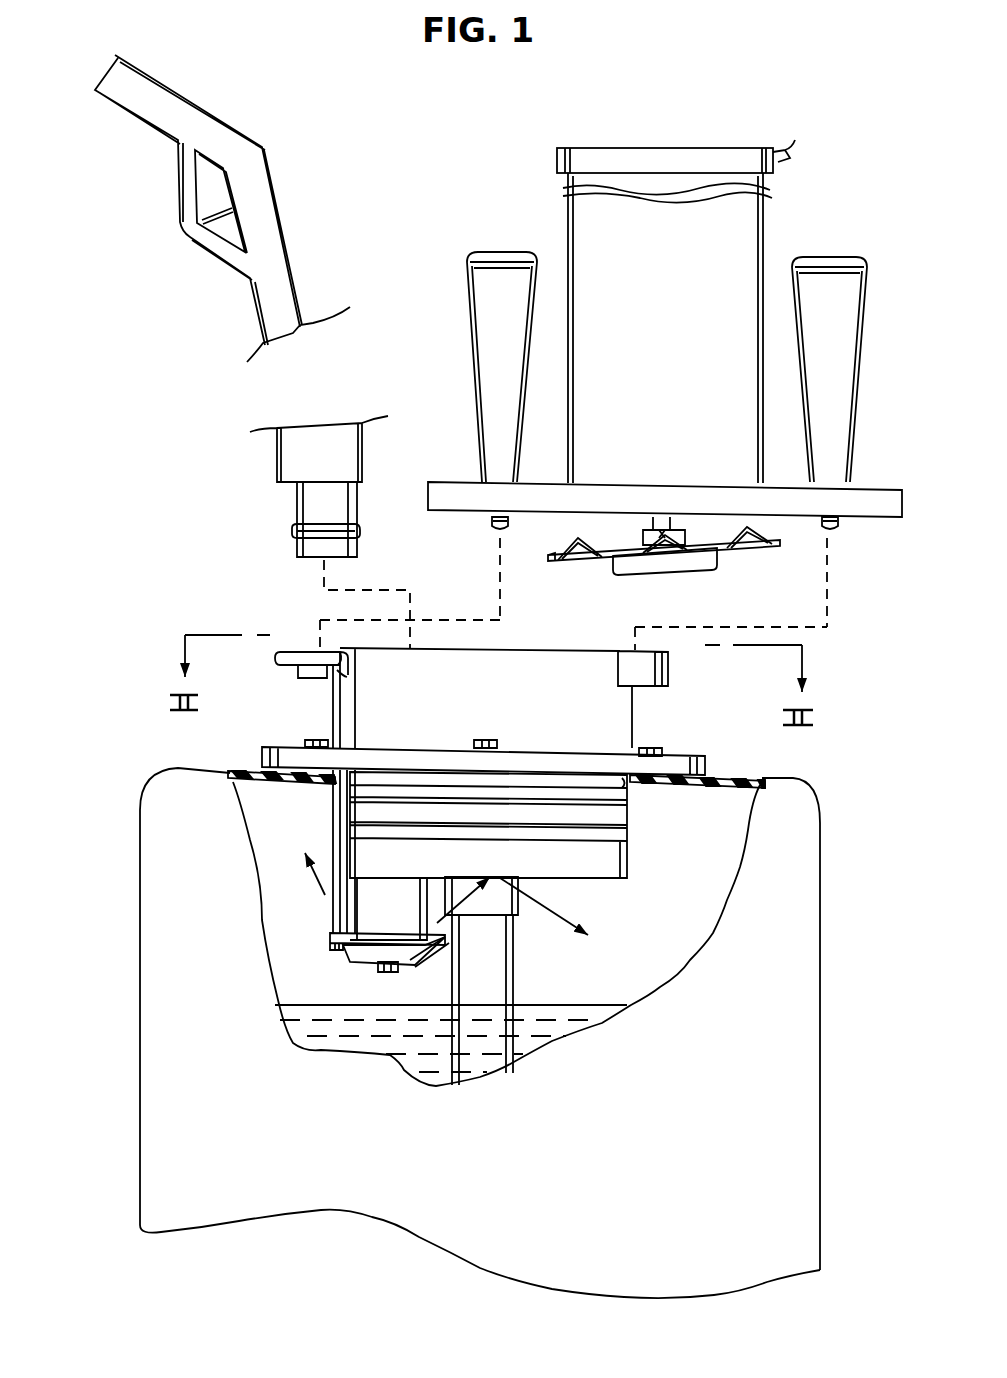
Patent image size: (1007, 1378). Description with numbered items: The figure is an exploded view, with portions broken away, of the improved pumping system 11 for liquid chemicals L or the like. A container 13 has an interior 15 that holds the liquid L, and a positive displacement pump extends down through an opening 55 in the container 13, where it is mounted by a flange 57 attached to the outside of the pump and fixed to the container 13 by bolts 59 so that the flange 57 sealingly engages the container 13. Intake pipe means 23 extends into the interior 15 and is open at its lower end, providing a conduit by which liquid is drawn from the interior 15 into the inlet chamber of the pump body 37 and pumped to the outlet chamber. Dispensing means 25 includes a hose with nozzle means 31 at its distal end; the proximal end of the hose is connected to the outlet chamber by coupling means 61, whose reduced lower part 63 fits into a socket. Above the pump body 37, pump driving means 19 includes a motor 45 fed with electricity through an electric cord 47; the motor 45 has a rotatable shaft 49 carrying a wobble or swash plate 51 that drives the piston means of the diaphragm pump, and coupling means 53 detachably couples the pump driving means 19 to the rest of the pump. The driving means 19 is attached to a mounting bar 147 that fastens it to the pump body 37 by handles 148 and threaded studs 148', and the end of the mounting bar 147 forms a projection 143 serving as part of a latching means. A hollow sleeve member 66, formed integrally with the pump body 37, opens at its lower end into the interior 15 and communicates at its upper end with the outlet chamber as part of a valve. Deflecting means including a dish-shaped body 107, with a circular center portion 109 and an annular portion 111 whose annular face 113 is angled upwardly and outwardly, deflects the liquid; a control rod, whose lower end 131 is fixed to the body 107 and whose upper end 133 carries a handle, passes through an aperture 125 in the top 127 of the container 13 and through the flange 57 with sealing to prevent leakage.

The pumping system 11 is at (193, 592).
The container 13 is at (802, 942).
The interior 15 is at (660, 943).
The pump driving means 19 is at (775, 232).
The intake pipe means 23 is at (493, 977).
The dispensing means 25 is at (380, 208).
The nozzle means 31 is at (255, 187).
The pump body 37 is at (612, 720).
The motor 45 is at (588, 215).
The electric cord 47 is at (782, 152).
The rotatable shaft 49 is at (673, 523).
The swash plate 51 is at (752, 547).
The coupling means 53 is at (867, 480).
The opening 55 is at (627, 807).
The flange 57 is at (693, 753).
The bolts 59 is at (317, 742).
The coupling means 61 is at (340, 462).
The reduced lower part 63 is at (345, 545).
The hollow sleeve member 66 is at (372, 892).
The dish-shaped body 107 is at (347, 962).
The circular center portion 109 is at (392, 972).
The annular portion 111 is at (437, 967).
The annular face 113 is at (433, 928).
The aperture 125 is at (333, 797).
The top 127 is at (705, 783).
The lower end 131 is at (330, 932).
The upper end 133 is at (347, 682).
The projection 143 is at (445, 487).
The mounting bar 147 is at (578, 492).
The handles 148 is at (649, 367).
The threaded studs 148' is at (614, 583).
The liquid chemicals L is at (584, 1030).